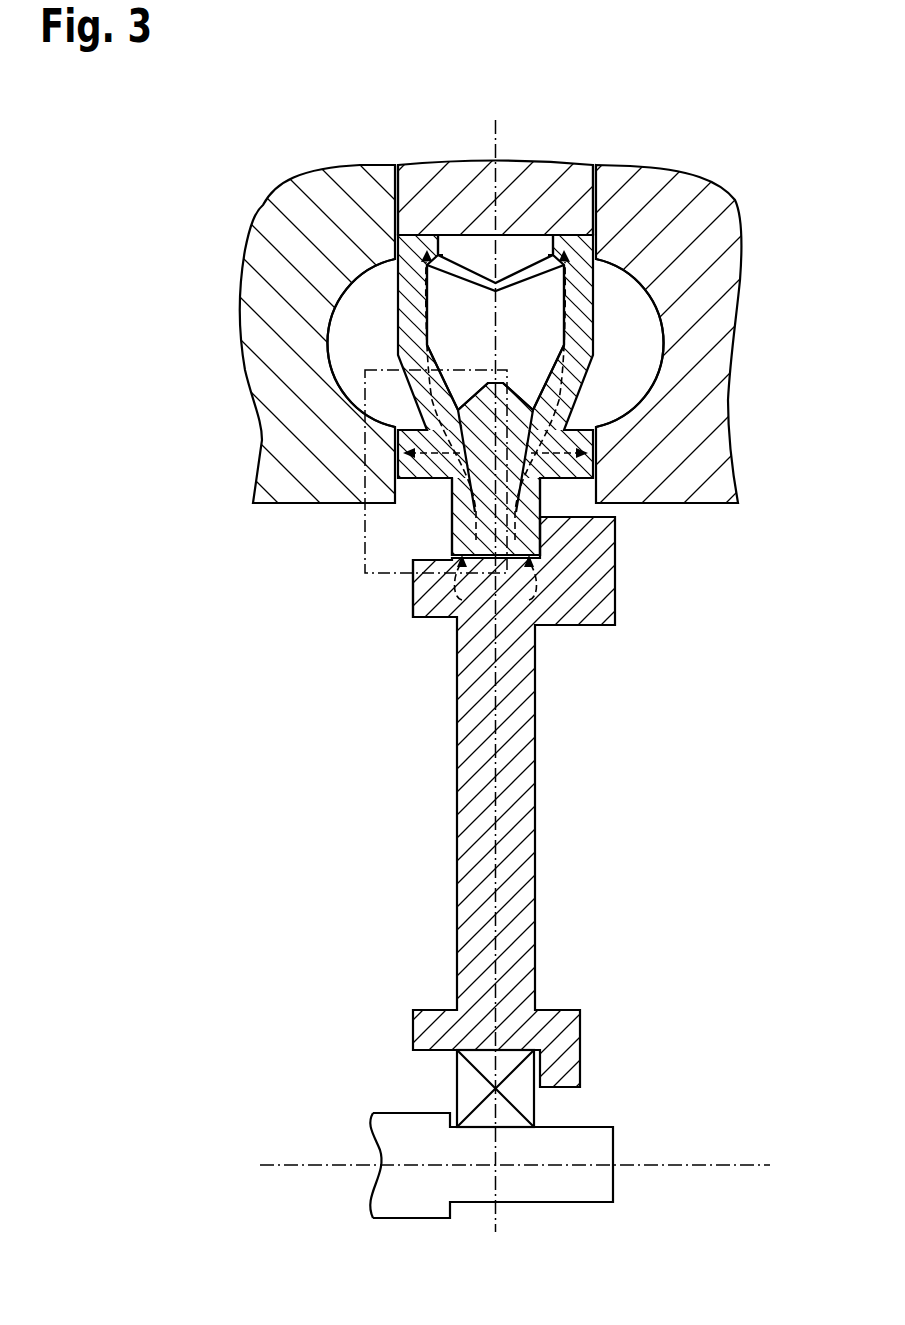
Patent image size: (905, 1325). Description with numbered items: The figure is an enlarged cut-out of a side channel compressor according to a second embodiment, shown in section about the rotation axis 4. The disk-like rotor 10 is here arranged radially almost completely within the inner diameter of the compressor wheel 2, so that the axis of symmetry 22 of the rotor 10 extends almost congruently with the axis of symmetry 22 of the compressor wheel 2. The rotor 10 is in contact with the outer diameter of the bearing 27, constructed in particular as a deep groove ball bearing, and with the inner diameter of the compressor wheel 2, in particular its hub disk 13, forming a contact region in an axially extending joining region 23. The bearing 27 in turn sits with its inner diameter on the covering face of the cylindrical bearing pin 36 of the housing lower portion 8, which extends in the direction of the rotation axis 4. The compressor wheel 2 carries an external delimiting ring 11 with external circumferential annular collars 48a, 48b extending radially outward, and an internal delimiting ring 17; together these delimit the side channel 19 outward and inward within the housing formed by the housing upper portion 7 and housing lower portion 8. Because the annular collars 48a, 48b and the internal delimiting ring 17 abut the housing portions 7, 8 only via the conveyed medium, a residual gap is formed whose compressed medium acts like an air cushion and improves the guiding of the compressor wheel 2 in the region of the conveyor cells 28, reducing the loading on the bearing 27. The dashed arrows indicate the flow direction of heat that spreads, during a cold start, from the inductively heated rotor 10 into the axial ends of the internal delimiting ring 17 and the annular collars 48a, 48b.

The compressor wheel 2 is at (450, 505).
The rotation axis 4 is at (282, 1180).
The housing upper portion 7 is at (265, 229).
The housing lower portion 8 is at (725, 228).
The rotor 10 is at (517, 810).
The external delimiting ring 11 is at (518, 240).
The hub disk 13 is at (450, 527).
The internal delimiting ring 17 is at (420, 439).
The side channel 19 is at (355, 352).
The axis of symmetry 22 is at (500, 1248).
The joining region 23 is at (412, 608).
The bearing 27 is at (525, 1073).
The conveyor cells 28 is at (468, 318).
The bearing pin 36 is at (585, 1142).
The external circumferential annular collar 48a is at (428, 235).
The external circumferential annular collar 48b is at (570, 238).